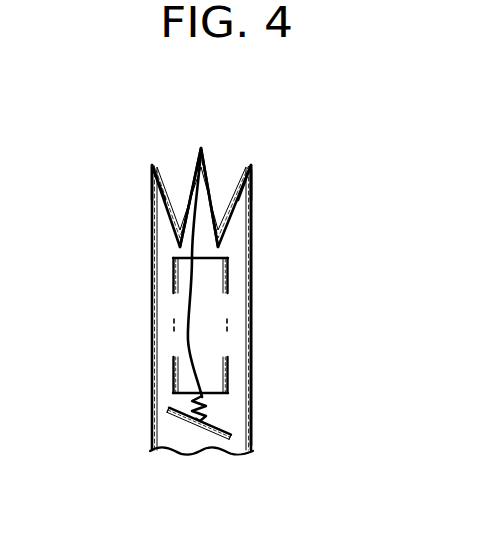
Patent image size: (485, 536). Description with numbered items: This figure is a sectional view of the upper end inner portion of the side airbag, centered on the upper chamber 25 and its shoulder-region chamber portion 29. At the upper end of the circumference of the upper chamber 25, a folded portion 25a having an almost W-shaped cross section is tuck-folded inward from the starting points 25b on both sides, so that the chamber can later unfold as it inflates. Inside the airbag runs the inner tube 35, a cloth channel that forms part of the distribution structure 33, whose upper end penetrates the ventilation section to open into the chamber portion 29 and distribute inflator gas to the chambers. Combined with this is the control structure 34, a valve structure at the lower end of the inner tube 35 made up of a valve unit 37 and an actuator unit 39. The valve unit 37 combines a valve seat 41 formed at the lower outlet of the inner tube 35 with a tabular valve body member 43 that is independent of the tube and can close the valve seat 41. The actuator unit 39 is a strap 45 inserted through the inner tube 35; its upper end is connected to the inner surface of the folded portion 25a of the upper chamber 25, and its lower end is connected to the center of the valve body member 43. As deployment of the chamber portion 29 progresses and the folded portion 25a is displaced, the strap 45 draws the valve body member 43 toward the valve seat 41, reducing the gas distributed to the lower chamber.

The upper chamber 25 is at (253, 301).
The folded portion 25a is at (205, 160).
The starting points 25b is at (150, 160).
The chamber portion 29 is at (253, 280).
The distribution structure 33 is at (168, 362).
The control structure 34 is at (266, 411).
The inner tube 35 is at (229, 363).
The valve unit 37 is at (239, 427).
The actuator unit 39 is at (212, 380).
The valve seat 41 is at (202, 335).
The valve body member 43 is at (201, 425).
The strap 45 is at (190, 302).